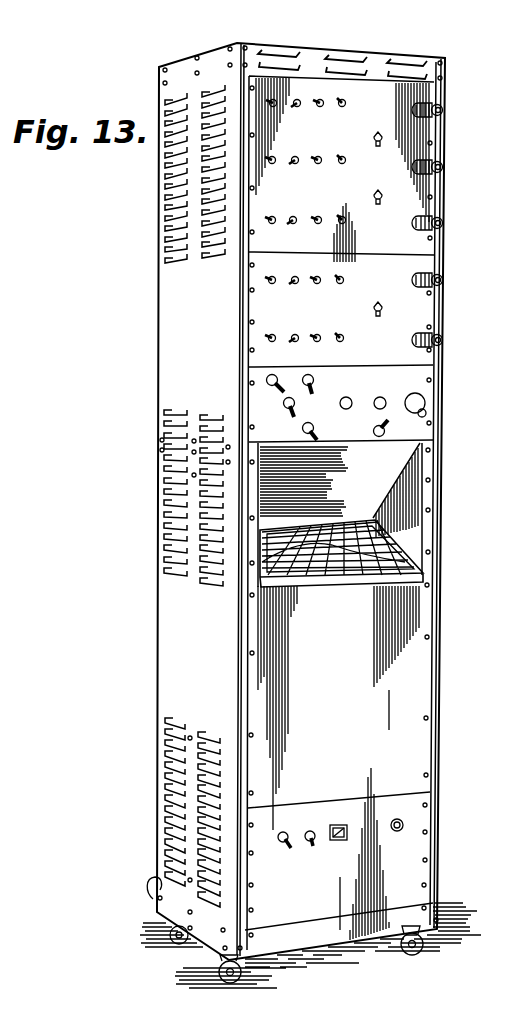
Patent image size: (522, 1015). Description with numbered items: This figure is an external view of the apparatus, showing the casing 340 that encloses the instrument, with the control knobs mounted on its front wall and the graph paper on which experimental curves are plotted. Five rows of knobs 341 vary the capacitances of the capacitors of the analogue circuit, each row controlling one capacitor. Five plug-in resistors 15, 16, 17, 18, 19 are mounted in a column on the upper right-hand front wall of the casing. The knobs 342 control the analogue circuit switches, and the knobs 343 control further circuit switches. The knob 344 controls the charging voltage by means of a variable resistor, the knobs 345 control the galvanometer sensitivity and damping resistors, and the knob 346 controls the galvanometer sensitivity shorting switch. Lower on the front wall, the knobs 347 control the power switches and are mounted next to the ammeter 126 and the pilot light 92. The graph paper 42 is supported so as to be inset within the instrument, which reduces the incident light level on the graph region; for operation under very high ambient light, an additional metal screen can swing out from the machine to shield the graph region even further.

The casing 340 is at (219, 46).
The plug-in resistor 15 is at (444, 110).
The plug-in resistor 16 is at (444, 167).
The plug-in resistor 17 is at (444, 222).
The plug-in resistor 18 is at (444, 279).
The plug-in resistor 19 is at (444, 340).
The knobs 341 is at (339, 152).
The knobs 342 is at (378, 302).
The knobs 343 is at (283, 388).
The knob 344 is at (354, 390).
The knobs 345 is at (383, 398).
The knob 346 is at (388, 428).
The graph paper 42 is at (372, 557).
The knobs 347 is at (313, 846).
The ammeter 126 is at (343, 823).
The pilot light 92 is at (396, 832).